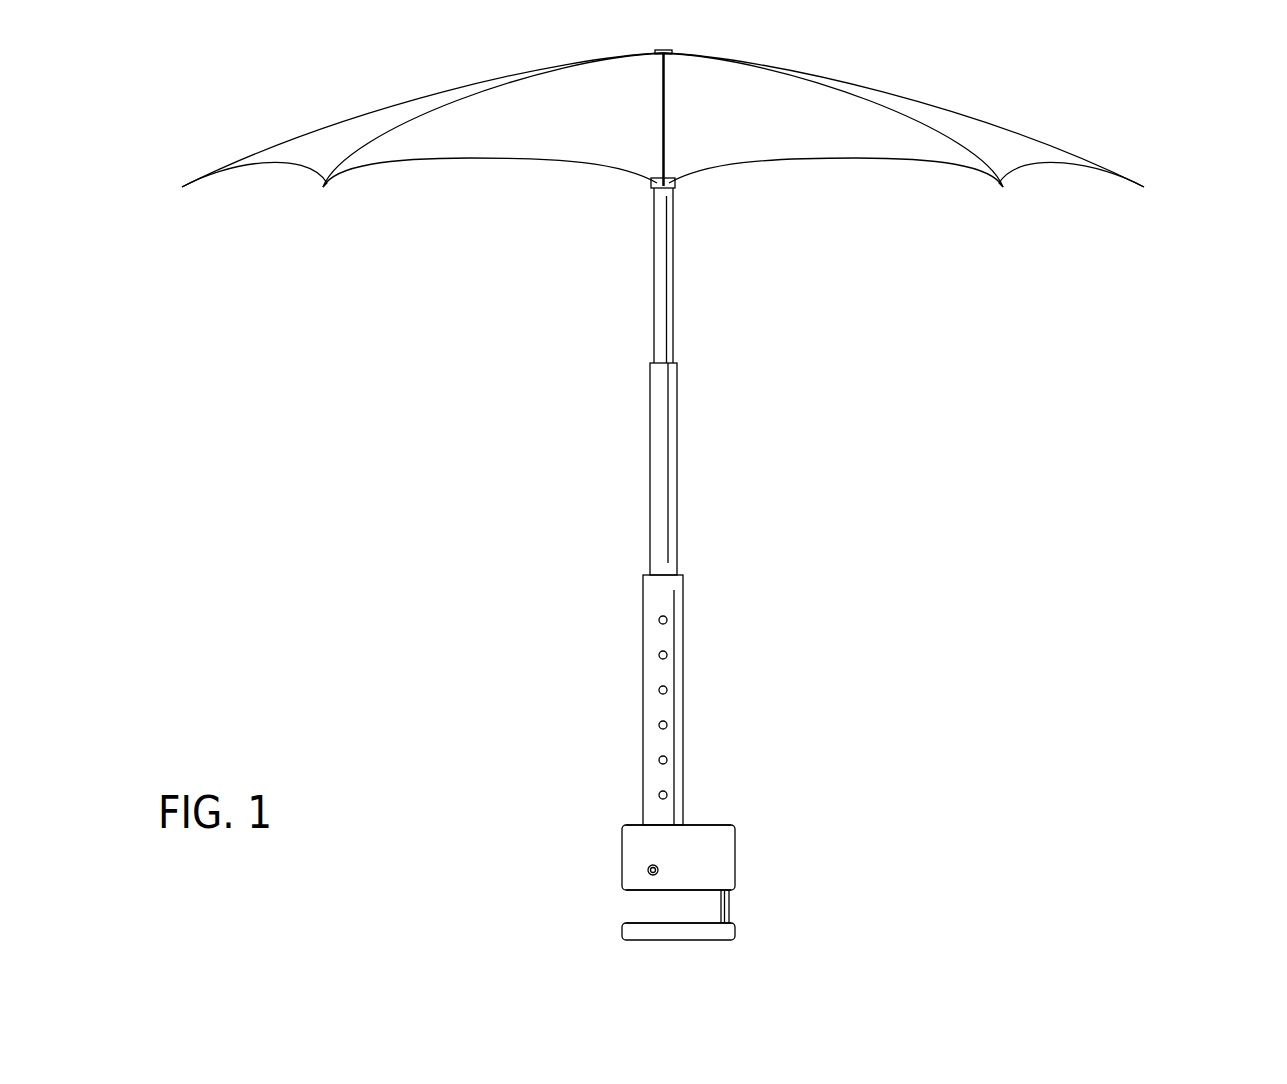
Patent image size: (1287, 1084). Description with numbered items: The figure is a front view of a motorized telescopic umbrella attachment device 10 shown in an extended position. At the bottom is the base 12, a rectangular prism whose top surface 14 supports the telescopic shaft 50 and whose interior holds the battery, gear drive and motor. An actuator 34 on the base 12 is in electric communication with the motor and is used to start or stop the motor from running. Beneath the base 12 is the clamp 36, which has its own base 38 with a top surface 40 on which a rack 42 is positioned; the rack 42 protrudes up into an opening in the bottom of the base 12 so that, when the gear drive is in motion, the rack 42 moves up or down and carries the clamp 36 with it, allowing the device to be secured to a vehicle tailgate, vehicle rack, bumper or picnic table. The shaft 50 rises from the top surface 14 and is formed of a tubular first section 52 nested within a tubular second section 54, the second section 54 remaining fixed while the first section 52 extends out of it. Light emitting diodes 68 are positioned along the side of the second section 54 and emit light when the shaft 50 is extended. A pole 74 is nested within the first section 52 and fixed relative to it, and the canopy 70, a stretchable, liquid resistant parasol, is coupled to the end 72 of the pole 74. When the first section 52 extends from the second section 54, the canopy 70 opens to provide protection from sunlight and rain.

The motorized telescopic umbrella attachment device 10 is at (1169, 144).
The canopy 70 is at (963, 121).
The end of pole 72 is at (670, 190).
The pole 74 is at (662, 272).
The shaft 50 is at (588, 488).
The first section 52 is at (662, 467).
The second section 54 is at (665, 588).
The light emitting diodes 68 is at (667, 620).
The base 12 is at (717, 853).
The top surface 14 is at (710, 824).
The actuator 34 is at (647, 866).
The clamp 36 is at (768, 922).
The rack 42 is at (730, 913).
The base of clamp 38 is at (693, 935).
The top surface of clamp base 40 is at (633, 925).